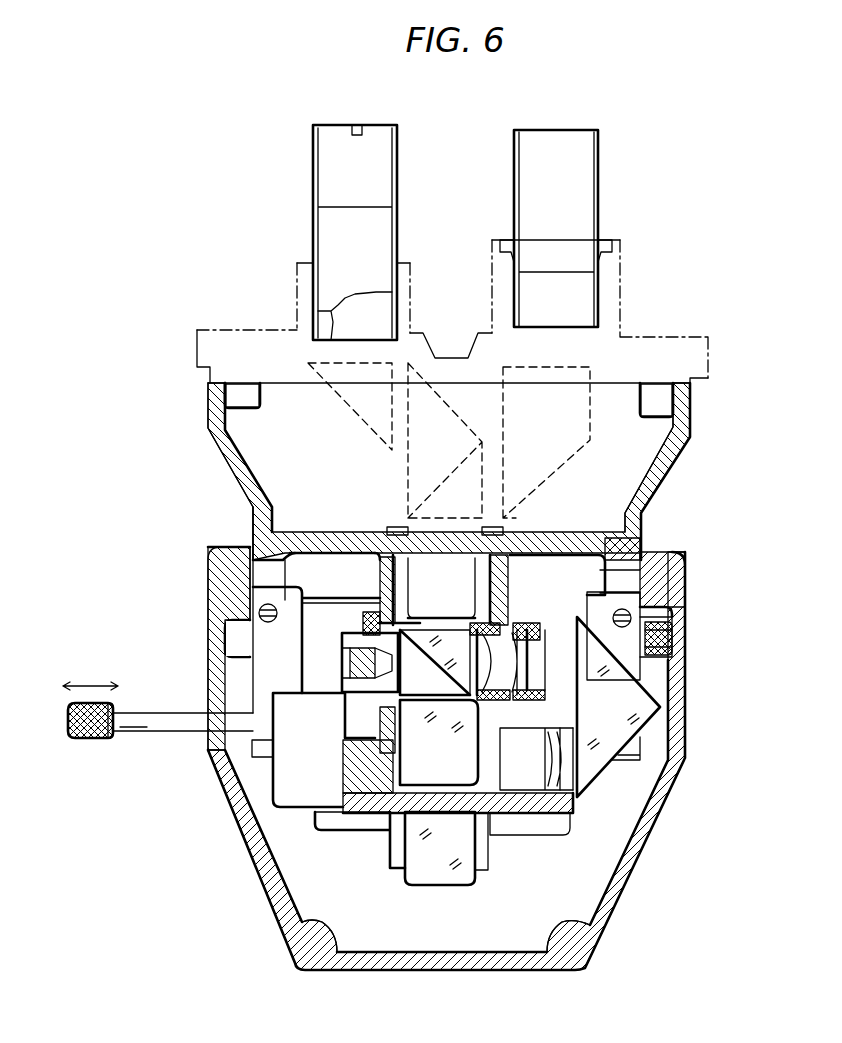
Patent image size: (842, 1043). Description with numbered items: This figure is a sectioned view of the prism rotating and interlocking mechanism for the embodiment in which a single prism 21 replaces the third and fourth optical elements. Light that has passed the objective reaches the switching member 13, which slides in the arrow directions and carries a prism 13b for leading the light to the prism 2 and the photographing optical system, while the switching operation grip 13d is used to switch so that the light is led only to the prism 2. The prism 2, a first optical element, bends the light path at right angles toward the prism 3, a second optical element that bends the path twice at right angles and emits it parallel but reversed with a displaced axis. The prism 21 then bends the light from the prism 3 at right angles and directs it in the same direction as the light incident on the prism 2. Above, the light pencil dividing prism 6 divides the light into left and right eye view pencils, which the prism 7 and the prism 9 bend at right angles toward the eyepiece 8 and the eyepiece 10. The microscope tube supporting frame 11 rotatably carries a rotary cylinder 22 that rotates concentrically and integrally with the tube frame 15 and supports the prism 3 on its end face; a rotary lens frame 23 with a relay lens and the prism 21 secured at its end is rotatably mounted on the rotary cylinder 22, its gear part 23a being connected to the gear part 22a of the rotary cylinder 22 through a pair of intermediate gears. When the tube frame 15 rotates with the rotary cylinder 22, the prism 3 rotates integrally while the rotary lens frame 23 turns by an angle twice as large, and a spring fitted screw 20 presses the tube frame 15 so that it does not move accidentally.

The prism 2 is at (431, 770).
The prism 3 is at (596, 722).
The light pencil dividing prism 6 is at (408, 470).
The prism 7 is at (565, 467).
The eyepiece 8 is at (598, 160).
The prism 9 is at (350, 409).
The eyepiece 10 is at (397, 160).
The microscope tube supporting frame 11 is at (210, 580).
The switching member 13 is at (392, 848).
The prism 13b is at (440, 885).
The switching operation grip 13d is at (92, 740).
The tube frame 15 is at (690, 476).
The spring fitted screw 20 is at (672, 636).
The prism 21 is at (450, 668).
The rotary cylinder 22 is at (518, 797).
The gear part 22a is at (535, 710).
The rotary lens frame 23 is at (485, 618).
The gear part 23a is at (528, 614).